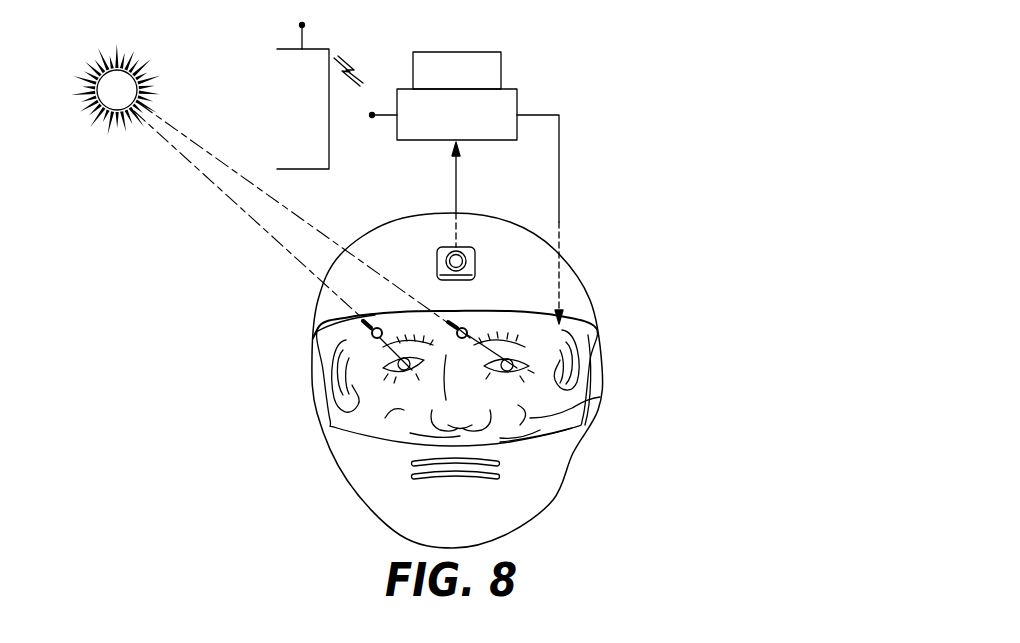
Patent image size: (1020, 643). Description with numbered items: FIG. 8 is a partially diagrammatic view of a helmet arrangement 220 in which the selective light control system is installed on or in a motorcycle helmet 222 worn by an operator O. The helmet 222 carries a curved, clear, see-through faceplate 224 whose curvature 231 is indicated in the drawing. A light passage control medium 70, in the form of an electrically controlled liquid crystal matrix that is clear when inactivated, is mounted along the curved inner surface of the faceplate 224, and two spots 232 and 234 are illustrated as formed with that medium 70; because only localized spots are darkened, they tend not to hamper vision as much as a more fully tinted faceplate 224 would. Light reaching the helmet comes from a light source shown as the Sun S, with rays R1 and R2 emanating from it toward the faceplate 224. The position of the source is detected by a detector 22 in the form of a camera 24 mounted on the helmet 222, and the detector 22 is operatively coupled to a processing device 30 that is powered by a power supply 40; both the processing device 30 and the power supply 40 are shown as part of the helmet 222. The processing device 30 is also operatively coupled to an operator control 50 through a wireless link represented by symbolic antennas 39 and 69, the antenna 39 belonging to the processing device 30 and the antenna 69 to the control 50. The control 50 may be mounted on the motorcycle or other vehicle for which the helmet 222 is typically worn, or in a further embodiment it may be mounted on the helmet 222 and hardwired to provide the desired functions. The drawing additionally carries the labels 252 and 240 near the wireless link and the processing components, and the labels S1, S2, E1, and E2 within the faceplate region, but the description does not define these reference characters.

The Sun S is at (115, 89).
The ray R1 is at (207, 153).
The ray R2 is at (218, 184).
The operator control 50 is at (313, 119).
The symbolic antenna 69 is at (300, 26).
The wireless communication link 252 is at (357, 68).
The power supply 40 is at (467, 82).
The processing device 30 is at (467, 125).
The symbolic antenna 39 is at (372, 118).
The control system 240 is at (571, 74).
The helmet arrangement 220 is at (759, 87).
The helmet 222 is at (574, 470).
The faceplate 224 is at (340, 430).
The spot 232 is at (322, 314).
The curvature 231 is at (527, 430).
The spot 234 is at (465, 327).
The detector 22 is at (436, 260).
The camera 24 is at (450, 246).
The light passage control medium 70 is at (583, 372).
The operator O is at (600, 397).
The first sensor S1 is at (507, 338).
The second sensor S2 is at (378, 327).
The first eye E1 is at (502, 377).
The second eye E2 is at (407, 377).